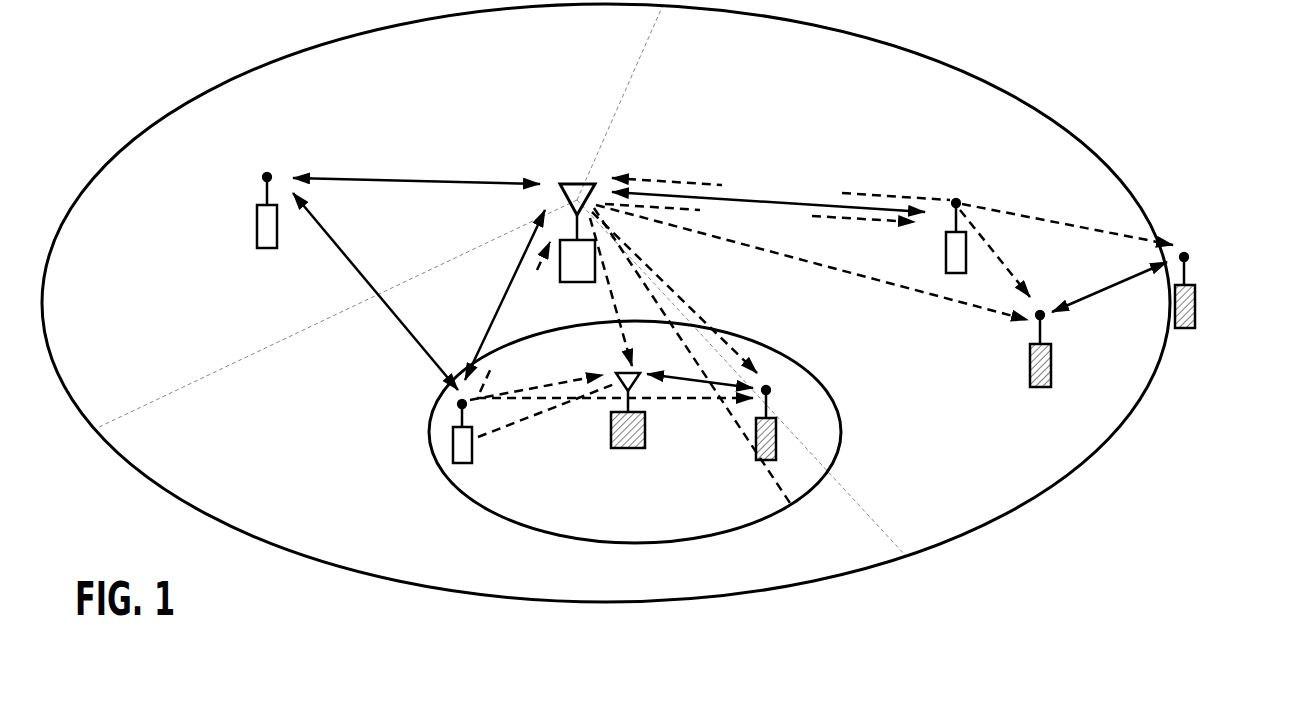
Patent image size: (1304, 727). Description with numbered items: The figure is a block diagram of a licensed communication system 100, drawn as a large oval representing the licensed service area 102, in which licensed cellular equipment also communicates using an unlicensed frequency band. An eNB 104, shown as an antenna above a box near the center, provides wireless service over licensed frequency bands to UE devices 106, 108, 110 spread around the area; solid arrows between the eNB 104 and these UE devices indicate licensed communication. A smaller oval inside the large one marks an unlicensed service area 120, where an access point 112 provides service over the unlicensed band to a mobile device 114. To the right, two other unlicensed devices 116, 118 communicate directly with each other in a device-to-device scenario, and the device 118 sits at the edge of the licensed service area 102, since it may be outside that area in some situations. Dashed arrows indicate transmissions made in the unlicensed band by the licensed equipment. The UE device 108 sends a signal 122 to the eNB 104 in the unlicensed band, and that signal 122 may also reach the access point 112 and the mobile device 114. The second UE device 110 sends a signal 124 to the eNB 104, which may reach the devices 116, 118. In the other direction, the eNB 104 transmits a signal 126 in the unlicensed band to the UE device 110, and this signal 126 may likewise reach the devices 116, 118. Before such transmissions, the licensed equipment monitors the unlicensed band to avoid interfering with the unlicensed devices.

The licensed communication system 100 is at (501, 280).
The licensed service area 102 is at (606, 301).
The eNB 104 is at (572, 250).
The UE device 106 is at (222, 211).
The UE device 108 is at (493, 432).
The UE device 110 is at (924, 240).
The access point 112 is at (652, 417).
The mobile device 114 is at (796, 423).
The device 116 is at (1072, 355).
The device 118 is at (1219, 291).
The unlicensed service area 120 is at (635, 425).
The signal 122 is at (524, 317).
The signal 124 is at (785, 176).
The signal 126 is at (760, 228).